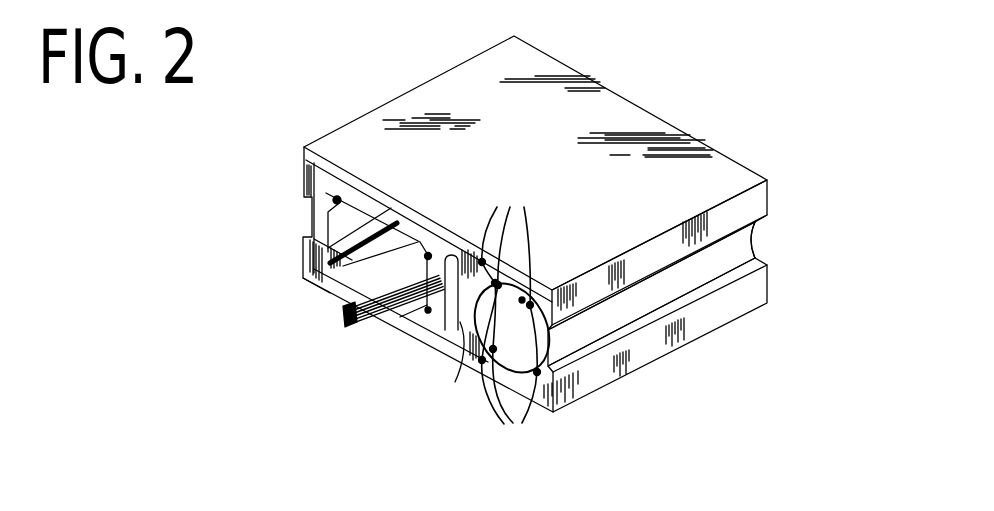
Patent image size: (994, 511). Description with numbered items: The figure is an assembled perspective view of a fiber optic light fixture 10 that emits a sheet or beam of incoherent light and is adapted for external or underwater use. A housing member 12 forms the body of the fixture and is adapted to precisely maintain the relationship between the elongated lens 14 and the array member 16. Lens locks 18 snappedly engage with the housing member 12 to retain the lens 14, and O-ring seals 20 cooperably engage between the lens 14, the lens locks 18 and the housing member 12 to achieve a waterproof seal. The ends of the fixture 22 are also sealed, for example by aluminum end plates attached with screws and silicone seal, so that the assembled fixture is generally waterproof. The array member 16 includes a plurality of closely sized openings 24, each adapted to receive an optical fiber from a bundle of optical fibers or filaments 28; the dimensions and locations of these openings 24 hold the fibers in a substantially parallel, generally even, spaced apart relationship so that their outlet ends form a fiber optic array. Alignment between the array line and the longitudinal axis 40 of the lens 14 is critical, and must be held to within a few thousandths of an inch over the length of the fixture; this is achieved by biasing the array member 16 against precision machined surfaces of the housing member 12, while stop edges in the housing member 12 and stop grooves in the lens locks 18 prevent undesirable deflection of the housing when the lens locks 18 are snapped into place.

The fiber optic light fixture 10 is at (770, 398).
The housing member 12 is at (312, 220).
The elongated lens 14 is at (757, 240).
The array member 16 is at (430, 338).
The lens locks 18 is at (380, 103).
The O-ring seals 20 is at (510, 320).
The ends of the fixture 22 is at (676, 77).
The closely sized openings 24 is at (492, 355).
The bundle of optical fibers 28 is at (368, 325).
The longitudinal axis of the lens 40 is at (510, 327).